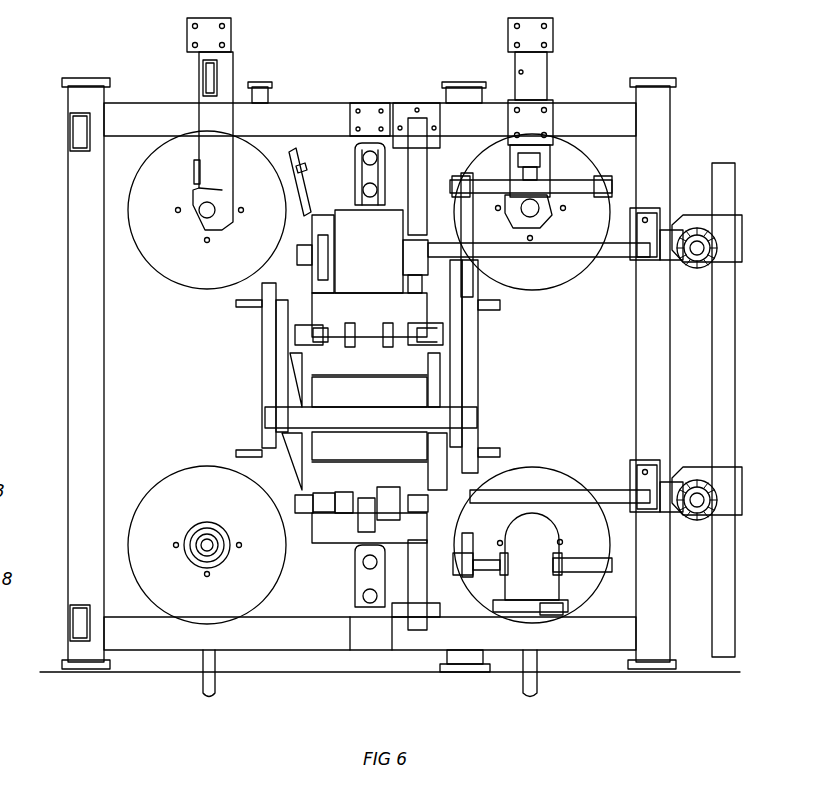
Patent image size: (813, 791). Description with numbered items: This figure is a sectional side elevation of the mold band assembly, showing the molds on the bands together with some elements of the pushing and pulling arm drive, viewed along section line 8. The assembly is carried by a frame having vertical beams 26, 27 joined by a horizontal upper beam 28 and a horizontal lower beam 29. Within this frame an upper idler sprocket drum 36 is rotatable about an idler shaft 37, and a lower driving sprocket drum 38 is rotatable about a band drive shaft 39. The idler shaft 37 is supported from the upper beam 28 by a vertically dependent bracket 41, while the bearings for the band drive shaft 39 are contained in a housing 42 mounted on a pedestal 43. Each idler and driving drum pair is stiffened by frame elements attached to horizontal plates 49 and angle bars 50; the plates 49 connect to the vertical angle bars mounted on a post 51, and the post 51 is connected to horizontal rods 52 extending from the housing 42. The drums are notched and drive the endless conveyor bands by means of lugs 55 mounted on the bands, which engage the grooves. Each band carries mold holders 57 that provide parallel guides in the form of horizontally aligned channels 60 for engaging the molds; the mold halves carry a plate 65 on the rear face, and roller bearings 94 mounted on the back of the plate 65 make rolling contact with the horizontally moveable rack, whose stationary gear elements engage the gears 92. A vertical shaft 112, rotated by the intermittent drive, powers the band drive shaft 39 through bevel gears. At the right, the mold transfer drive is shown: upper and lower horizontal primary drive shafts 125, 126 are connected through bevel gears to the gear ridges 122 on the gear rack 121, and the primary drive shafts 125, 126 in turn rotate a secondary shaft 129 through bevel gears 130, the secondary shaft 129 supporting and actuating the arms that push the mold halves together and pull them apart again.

The section line 8- 8 is at (400, 124).
The vertical beam 26 is at (670, 115).
The vertical beam 27 is at (68, 331).
The horizontal upper beam 28 is at (337, 103).
The horizontal lower beam 29 is at (290, 650).
The upper idler sprocket drum 36 is at (138, 212).
The idler shaft 37 is at (200, 230).
The lower driving sprocket drum 38 is at (172, 600).
The band drive shaft 39 is at (207, 550).
The vertically dependent bracket 41 is at (232, 62).
The housing 42 is at (540, 595).
The pedestal 43 is at (520, 610).
The horizontal plate 49 is at (236, 303).
The angle bar 50 is at (262, 380).
The post 51 is at (466, 570).
The horizontal rod 52 is at (602, 570).
The lug 55 is at (276, 355).
The mold holder 57 is at (312, 166).
The channel 60 is at (310, 185).
The plate 65 is at (275, 405).
The gear 92 is at (440, 337).
The roller bearing 94 is at (393, 330).
The vertical shaft 112 is at (209, 700).
The gear rack 121 is at (735, 420).
The gear ridge 122 is at (742, 255).
The upper horizontal primary drive shaft 125 is at (720, 240).
The lower horizontal primary drive shaft 126 is at (712, 503).
The secondary shaft 129 is at (607, 270).
The bevel gear 130 is at (680, 228).